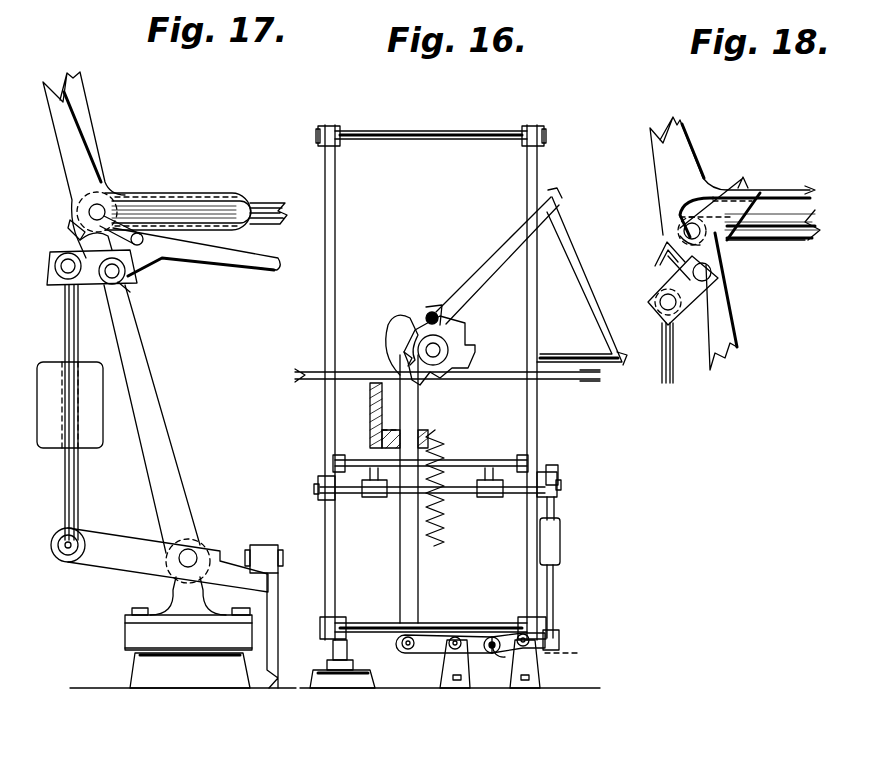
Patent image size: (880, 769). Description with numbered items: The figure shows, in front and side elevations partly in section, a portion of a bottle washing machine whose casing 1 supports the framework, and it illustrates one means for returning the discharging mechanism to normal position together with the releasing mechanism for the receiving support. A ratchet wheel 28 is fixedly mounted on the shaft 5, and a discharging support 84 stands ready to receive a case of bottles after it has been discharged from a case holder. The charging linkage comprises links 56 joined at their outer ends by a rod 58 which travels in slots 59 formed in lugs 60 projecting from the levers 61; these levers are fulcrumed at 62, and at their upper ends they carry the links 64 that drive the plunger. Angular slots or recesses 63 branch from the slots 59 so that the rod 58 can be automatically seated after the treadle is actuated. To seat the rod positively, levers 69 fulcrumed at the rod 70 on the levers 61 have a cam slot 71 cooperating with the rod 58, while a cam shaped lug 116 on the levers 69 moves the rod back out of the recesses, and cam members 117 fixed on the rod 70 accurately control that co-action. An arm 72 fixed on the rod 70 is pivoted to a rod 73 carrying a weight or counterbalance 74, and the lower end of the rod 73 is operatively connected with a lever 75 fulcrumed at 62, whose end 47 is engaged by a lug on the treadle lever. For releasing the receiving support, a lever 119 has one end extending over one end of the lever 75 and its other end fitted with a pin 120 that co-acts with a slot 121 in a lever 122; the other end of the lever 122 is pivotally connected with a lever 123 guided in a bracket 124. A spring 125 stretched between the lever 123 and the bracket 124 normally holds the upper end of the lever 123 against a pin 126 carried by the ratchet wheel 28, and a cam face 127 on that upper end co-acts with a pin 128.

In FIG. 16, the casing 1 is at (318, 381).
In FIG. 16, the shaft 5 is at (440, 360).
In FIG. 16, the ratchet wheel 28 is at (462, 340).
In FIG. 17, the end of lever 47 is at (258, 578).
In FIG. 16, the end of lever 47 is at (576, 653).
In FIG. 17, the links 56 is at (258, 215).
In FIG. 18, the links 56 is at (773, 240).
In FIG. 17, the rod 58 is at (104, 205).
In FIG. 16, the rod 58 is at (468, 462).
In FIG. 18, the rod 58 is at (680, 226).
In FIG. 17, the slots 59 is at (165, 208).
In FIG. 18, the slots 59 is at (782, 208).
In FIG. 17, the lugs 60 is at (212, 200).
In FIG. 18, the lugs 60 is at (773, 190).
In FIG. 17, the lever 61 is at (78, 130).
In FIG. 16, the lever 61 is at (330, 186).
In FIG. 18, the lever 61 is at (662, 140).
In FIG. 17, the fulcrum 62 is at (184, 562).
In FIG. 17, the slots or recesses 63 is at (88, 237).
In FIG. 18, the slots or recesses 63 is at (683, 238).
In FIG. 16, the links 64 is at (332, 128).
In FIG. 17, the levers 69 is at (248, 262).
In FIG. 18, the levers 69 is at (738, 190).
In FIG. 17, the rod 70 is at (112, 285).
In FIG. 16, the rod 70 is at (448, 493).
In FIG. 18, the rod 70 is at (712, 278).
In FIG. 17, the cam slot 71 is at (140, 245).
In FIG. 18, the cam slot 71 is at (718, 247).
In FIG. 17, the arm 72 is at (58, 278).
In FIG. 16, the arm 72 is at (558, 473).
In FIG. 18, the arm 72 is at (662, 308).
In FIG. 17, the rod 73 is at (66, 330).
In FIG. 16, the rod 73 is at (556, 508).
In FIG. 18, the rod 73 is at (663, 350).
In FIG. 17, the weight or counterbalance 74 is at (90, 440).
In FIG. 16, the weight or counterbalance 74 is at (560, 546).
In FIG. 17, the lever 75 is at (159, 560).
In FIG. 16, the lever 75 is at (552, 635).
In FIG. 16, the discharging support 84 is at (582, 276).
In FIG. 17, the cam shaped lug 116 is at (135, 282).
In FIG. 16, the cam shaped lug 116 is at (318, 490).
In FIG. 18, the cam shaped lug 116 is at (675, 275).
In FIG. 17, the cam members 117 is at (72, 224).
In FIG. 16, the cam members 117 is at (370, 498).
In FIG. 18, the cam members 117 is at (660, 262).
In FIG. 16, the lever 119 is at (500, 655).
In FIG. 16, the pin 120 is at (490, 653).
In FIG. 16, the slot 121 is at (497, 655).
In FIG. 16, the lever 122 is at (432, 645).
In FIG. 16, the lever 123 is at (400, 575).
In FIG. 16, the bracket 124 is at (372, 400).
In FIG. 16, the spring 125 is at (436, 520).
In FIG. 16, the pin 126 is at (402, 348).
In FIG. 16, the cam face 127 is at (402, 328).
In FIG. 16, the pin 128 is at (436, 312).